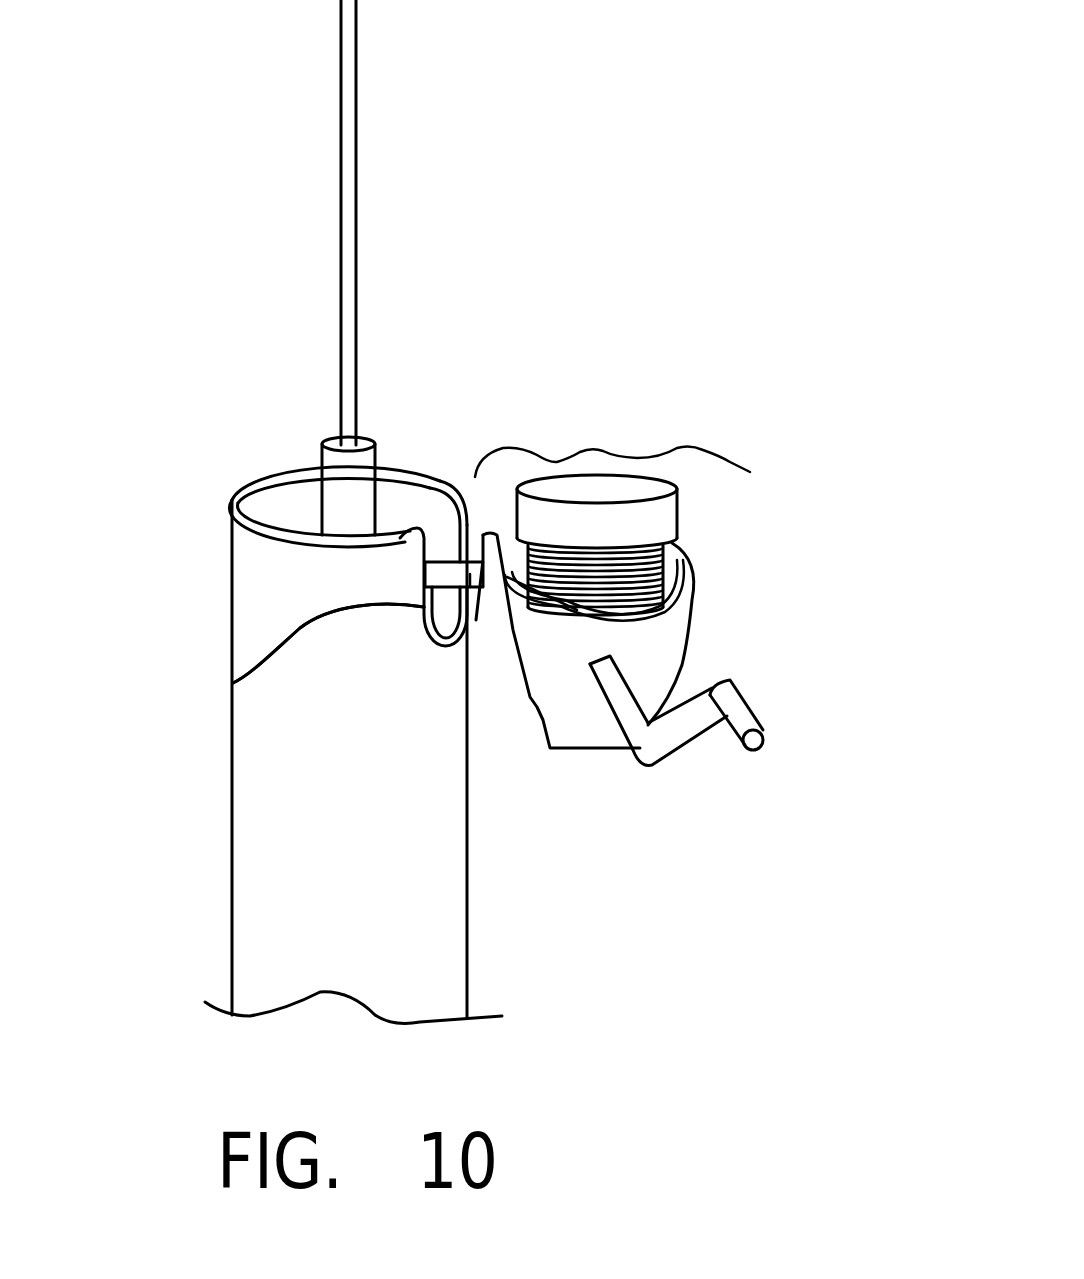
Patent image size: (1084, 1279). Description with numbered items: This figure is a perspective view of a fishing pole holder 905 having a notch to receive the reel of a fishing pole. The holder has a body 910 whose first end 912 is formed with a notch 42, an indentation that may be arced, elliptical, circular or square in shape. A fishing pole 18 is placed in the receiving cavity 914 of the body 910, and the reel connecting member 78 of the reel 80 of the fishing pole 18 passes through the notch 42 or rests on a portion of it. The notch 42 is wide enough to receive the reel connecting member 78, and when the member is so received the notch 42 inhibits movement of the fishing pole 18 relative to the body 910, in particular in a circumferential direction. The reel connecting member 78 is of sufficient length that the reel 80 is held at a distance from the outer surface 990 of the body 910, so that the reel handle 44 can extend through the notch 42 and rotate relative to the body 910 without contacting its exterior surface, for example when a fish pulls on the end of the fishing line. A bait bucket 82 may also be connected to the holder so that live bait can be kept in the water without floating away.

The fishing pole holder 905 is at (460, 192).
The fishing pole 18 is at (343, 342).
The bait bucket 82 is at (370, 437).
The receiving cavity 914 is at (290, 508).
The body 910 is at (466, 866).
The outer surface 990 is at (430, 930).
The notch 42 is at (233, 683).
The first end 912 is at (420, 472).
The reel connecting member 78 is at (476, 620).
The reel 80 is at (593, 448).
The reel handle 44 is at (762, 740).